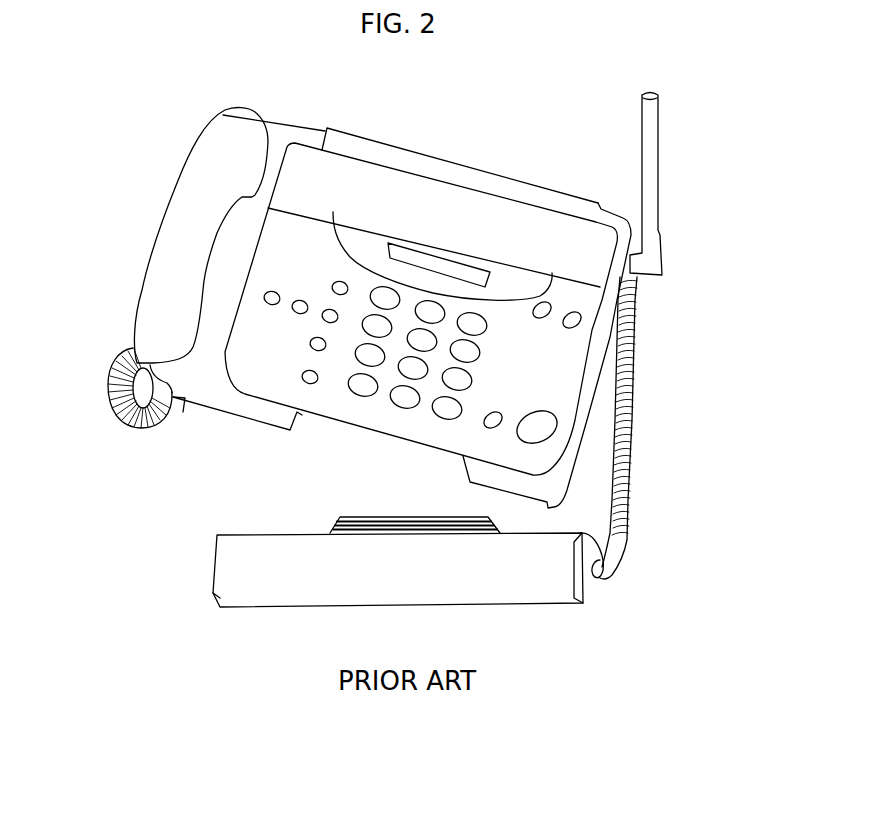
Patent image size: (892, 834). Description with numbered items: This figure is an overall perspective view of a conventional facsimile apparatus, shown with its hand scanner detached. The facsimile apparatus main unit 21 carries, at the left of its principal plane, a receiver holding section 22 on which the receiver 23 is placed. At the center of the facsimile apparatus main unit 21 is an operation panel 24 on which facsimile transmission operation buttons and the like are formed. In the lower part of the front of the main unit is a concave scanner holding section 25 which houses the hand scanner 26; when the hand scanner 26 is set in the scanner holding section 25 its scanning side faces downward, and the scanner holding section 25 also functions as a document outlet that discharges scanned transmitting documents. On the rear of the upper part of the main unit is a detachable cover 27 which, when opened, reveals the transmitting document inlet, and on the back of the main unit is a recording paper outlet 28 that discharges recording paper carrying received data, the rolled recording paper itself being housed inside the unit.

The facsimile apparatus main unit 21 is at (645, 333).
The receiver holding section 22 is at (287, 135).
The receiver 23 is at (162, 260).
The operation panel 24 is at (387, 413).
The scanner holding section 25 is at (217, 417).
The hand scanner 26 is at (325, 582).
The cover 27 is at (368, 175).
The recording paper outlet 28 is at (508, 187).